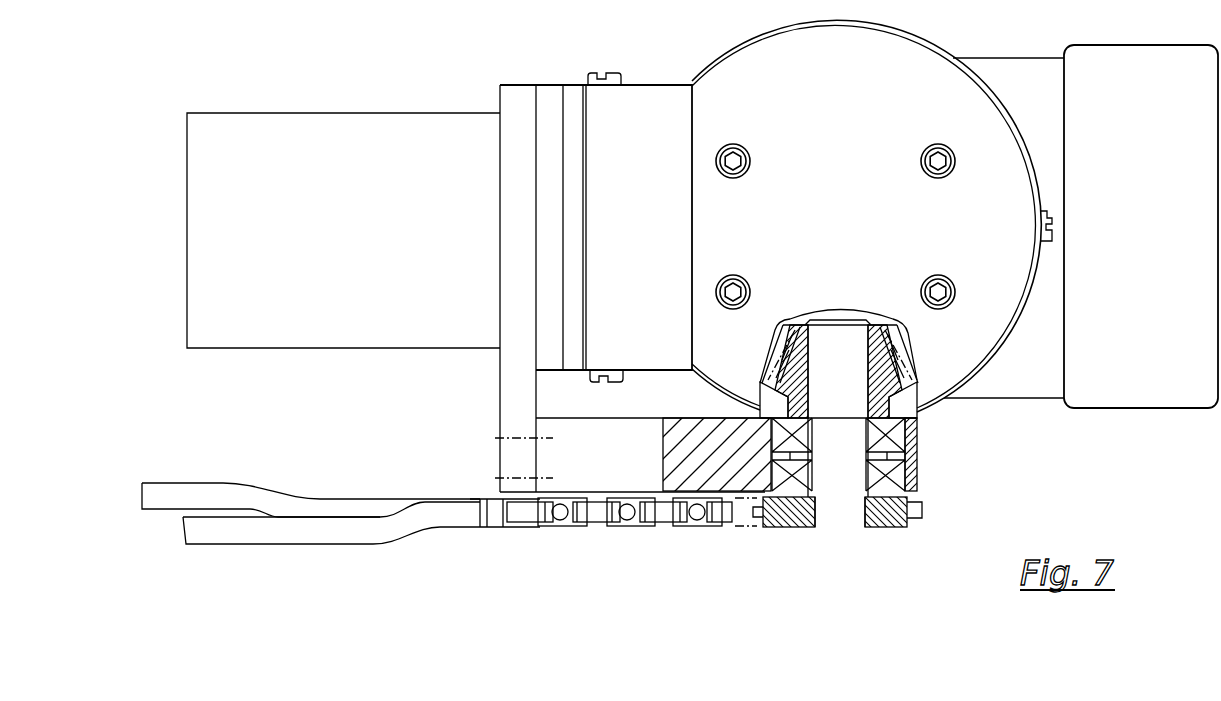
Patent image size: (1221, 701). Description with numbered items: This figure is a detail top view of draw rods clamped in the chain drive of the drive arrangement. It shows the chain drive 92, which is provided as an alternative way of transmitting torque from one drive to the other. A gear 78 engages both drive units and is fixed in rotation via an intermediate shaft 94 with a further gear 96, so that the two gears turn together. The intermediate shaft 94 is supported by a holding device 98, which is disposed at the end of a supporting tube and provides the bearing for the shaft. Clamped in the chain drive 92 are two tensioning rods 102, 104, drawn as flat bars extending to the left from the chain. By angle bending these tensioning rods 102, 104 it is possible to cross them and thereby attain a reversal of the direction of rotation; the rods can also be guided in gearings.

The gear 78 is at (890, 402).
The chain drive 92 is at (682, 522).
The intermediate shaft 94 is at (837, 475).
The gear 96 is at (890, 520).
The holding device 98 is at (522, 424).
The tensioning rod 102 is at (312, 528).
The tensioning rod 104 is at (226, 494).